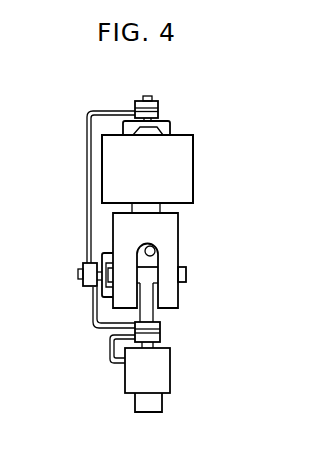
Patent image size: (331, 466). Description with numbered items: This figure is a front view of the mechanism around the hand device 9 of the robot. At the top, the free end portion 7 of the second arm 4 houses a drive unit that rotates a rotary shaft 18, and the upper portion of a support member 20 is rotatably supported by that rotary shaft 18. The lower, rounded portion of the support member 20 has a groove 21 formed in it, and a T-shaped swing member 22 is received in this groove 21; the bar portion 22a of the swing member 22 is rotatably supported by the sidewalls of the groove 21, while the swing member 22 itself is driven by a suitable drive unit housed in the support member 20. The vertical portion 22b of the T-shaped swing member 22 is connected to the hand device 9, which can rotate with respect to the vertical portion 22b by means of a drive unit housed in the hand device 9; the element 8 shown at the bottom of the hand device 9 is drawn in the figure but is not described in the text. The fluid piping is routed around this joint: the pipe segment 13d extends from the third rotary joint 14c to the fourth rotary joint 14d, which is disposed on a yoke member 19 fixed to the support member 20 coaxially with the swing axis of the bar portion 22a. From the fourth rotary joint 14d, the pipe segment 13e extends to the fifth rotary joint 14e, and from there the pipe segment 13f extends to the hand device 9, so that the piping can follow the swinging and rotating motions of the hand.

The second arm 4 is at (163, 169).
The free end portion 7 is at (188, 162).
The output shaft 8 is at (140, 404).
The hand device 9 is at (123, 384).
The pipe segment 13d is at (84, 126).
The pipe segment 13e is at (92, 302).
The pipe segment 13f is at (107, 352).
The third rotary joint 14c is at (158, 103).
The fourth rotary joint 14d is at (78, 272).
The fifth rotary joint 14e is at (160, 338).
The rotary shaft 18 is at (163, 207).
The yoke member 19 is at (171, 128).
The support member 20 is at (178, 228).
The groove 21 is at (153, 252).
The T-shaped swing member 22 is at (158, 302).
The bar portion 22a is at (186, 276).
The vertical portion 22b is at (160, 326).